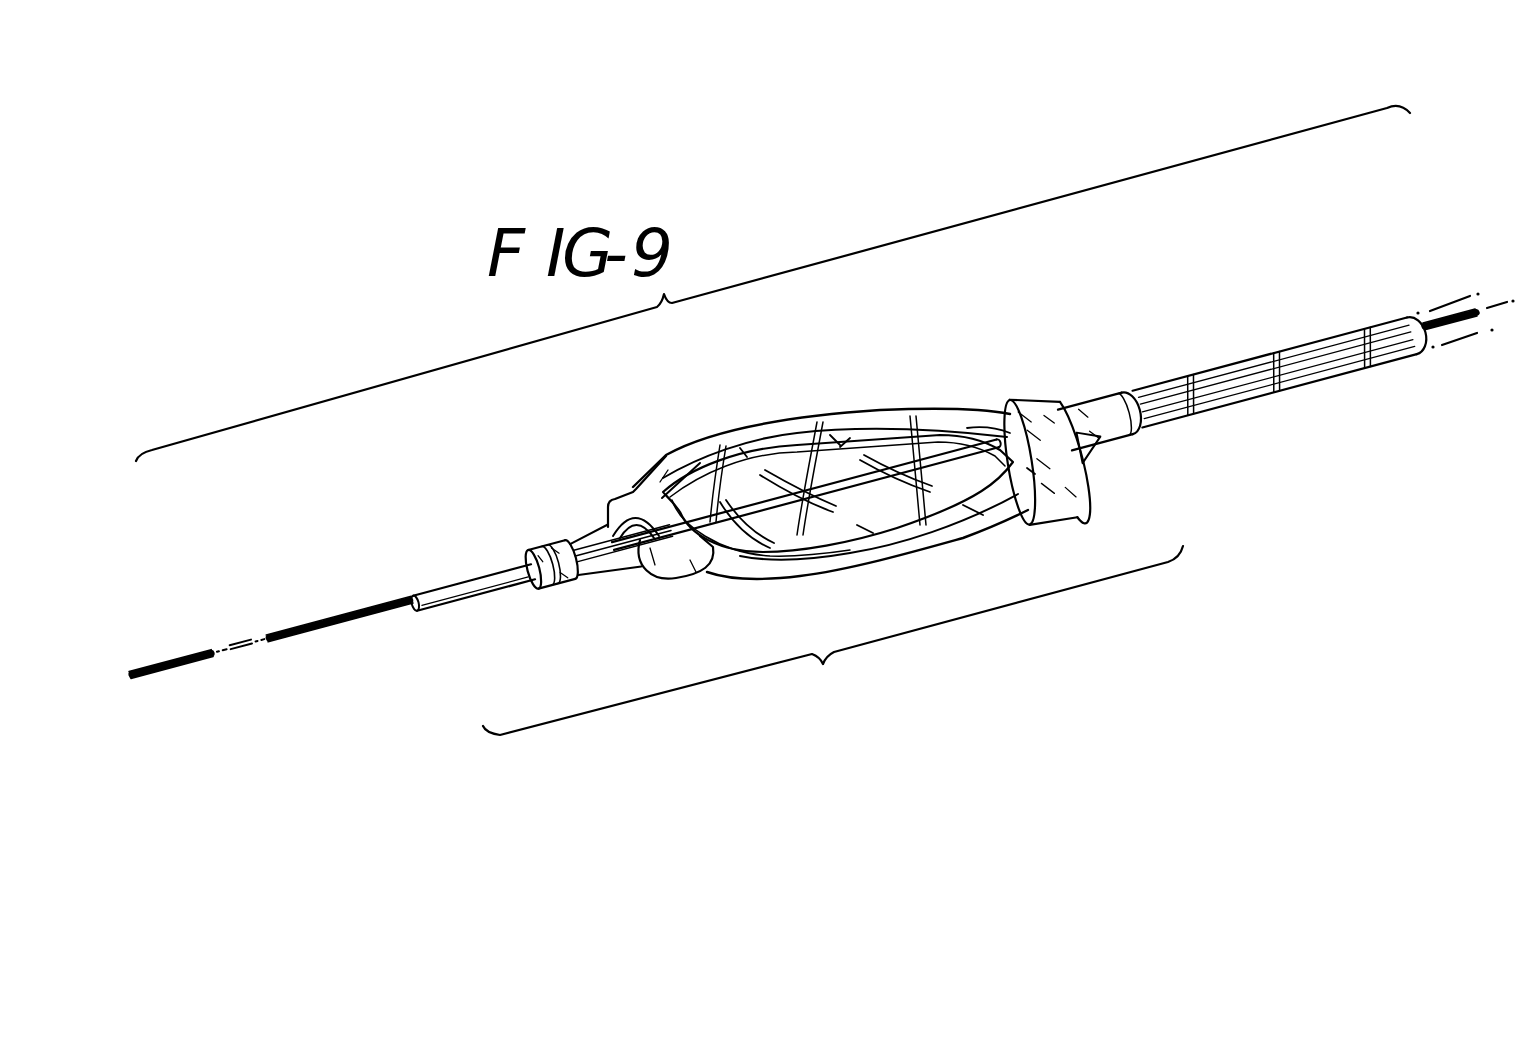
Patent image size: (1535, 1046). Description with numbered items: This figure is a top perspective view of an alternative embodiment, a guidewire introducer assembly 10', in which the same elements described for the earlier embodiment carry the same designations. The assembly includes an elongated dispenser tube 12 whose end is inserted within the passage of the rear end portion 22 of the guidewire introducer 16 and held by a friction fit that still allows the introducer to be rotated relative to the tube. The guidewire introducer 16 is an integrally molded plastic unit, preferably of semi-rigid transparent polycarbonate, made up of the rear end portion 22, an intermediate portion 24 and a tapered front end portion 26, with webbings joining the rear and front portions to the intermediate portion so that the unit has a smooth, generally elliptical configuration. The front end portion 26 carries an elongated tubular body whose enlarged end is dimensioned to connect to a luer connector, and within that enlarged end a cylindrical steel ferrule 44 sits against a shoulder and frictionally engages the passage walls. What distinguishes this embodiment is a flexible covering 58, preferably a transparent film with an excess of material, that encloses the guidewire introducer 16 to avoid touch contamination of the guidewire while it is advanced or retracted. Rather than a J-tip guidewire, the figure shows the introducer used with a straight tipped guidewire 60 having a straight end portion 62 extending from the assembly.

The guidewire introducer assembly 10' is at (825, 565).
The dispenser tube 12 is at (1263, 397).
The guidewire introducer 16 is at (833, 640).
The rear end portion 22 is at (1103, 385).
The intermediate portion 24 is at (757, 408).
The front end portion 26 is at (574, 514).
The ferrule 44 is at (487, 595).
The flexible covering 58 is at (833, 438).
The straight tipped guidewire 60 is at (350, 623).
The straight end portion 62 is at (185, 667).